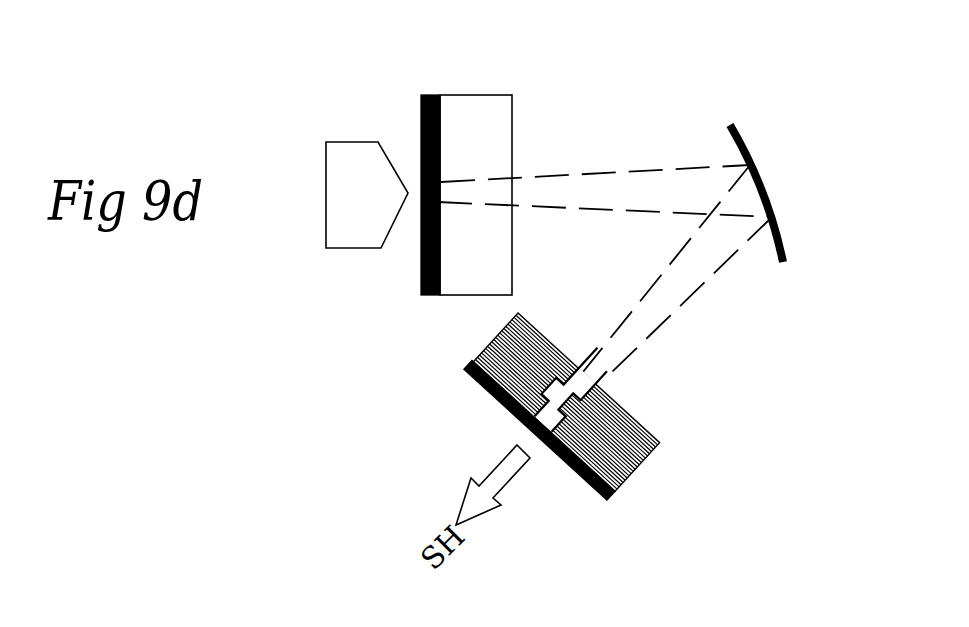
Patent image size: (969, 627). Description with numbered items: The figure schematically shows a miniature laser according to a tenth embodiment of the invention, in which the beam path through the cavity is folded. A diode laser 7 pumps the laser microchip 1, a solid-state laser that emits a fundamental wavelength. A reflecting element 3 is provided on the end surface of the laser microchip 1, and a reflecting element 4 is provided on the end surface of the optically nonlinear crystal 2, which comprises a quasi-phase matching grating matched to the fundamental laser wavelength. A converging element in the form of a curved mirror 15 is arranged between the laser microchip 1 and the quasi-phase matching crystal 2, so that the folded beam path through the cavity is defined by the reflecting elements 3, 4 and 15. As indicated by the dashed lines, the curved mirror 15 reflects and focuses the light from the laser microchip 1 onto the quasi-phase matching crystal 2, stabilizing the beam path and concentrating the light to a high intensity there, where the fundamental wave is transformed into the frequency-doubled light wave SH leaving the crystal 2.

The laser microchip 1 is at (482, 113).
The optically nonlinear crystal 2 is at (637, 460).
The reflecting element 3 is at (422, 120).
The reflecting element 4 is at (586, 482).
The diode laser 7 is at (338, 160).
The curved mirror 15 is at (750, 148).